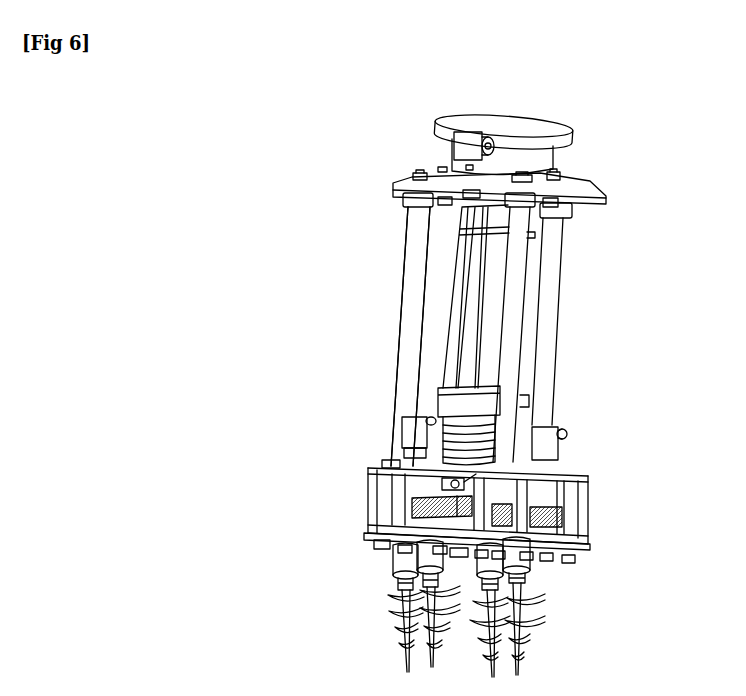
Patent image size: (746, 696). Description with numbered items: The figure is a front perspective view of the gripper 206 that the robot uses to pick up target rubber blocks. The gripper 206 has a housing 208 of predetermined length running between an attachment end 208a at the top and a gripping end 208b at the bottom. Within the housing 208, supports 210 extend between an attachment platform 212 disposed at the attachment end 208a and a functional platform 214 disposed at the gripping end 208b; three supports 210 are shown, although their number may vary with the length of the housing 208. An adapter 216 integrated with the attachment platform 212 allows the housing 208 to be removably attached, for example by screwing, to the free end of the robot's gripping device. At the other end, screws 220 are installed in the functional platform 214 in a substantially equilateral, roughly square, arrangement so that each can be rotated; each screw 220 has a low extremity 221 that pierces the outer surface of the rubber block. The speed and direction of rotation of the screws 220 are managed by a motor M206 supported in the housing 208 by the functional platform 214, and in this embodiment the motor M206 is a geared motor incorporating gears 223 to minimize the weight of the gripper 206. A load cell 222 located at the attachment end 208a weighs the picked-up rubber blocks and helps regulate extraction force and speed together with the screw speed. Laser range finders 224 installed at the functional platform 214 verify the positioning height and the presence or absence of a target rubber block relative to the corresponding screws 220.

The gripper 206 is at (362, 123).
The motor M206 is at (495, 275).
The housing 208 is at (405, 233).
The attachment end 208a is at (408, 197).
The gripping end 208b is at (390, 463).
The supports 210 is at (408, 343).
The attachment platform 212 is at (563, 182).
The functional platform 214 is at (580, 483).
The adapter 216 is at (560, 132).
The screws 220 is at (511, 633).
The extremity 221 is at (430, 620).
The load cell 222 is at (468, 142).
The gears 223 is at (410, 503).
The laser range finders 224 is at (408, 432).